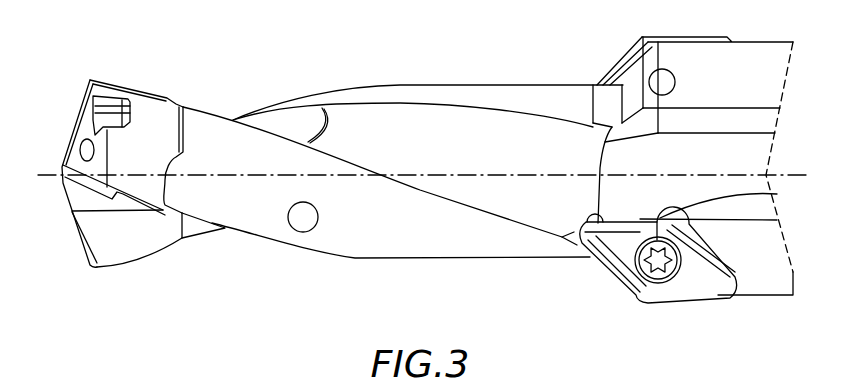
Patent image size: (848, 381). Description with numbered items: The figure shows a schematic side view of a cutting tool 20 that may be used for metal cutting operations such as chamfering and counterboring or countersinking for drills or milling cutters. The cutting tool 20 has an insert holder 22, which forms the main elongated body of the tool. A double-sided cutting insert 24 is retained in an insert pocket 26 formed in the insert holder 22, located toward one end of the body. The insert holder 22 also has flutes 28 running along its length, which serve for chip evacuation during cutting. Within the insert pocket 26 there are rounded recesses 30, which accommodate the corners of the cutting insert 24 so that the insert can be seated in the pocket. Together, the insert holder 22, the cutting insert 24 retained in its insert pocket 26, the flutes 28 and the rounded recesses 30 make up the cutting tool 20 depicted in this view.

The cutting tool 20 is at (88, 66).
The insert holder 22 is at (611, 58).
The double-sided cutting insert 24 is at (652, 313).
The insert pocket 26 is at (591, 268).
The flutes 28 is at (283, 137).
The rounded recesses 30 is at (779, 195).